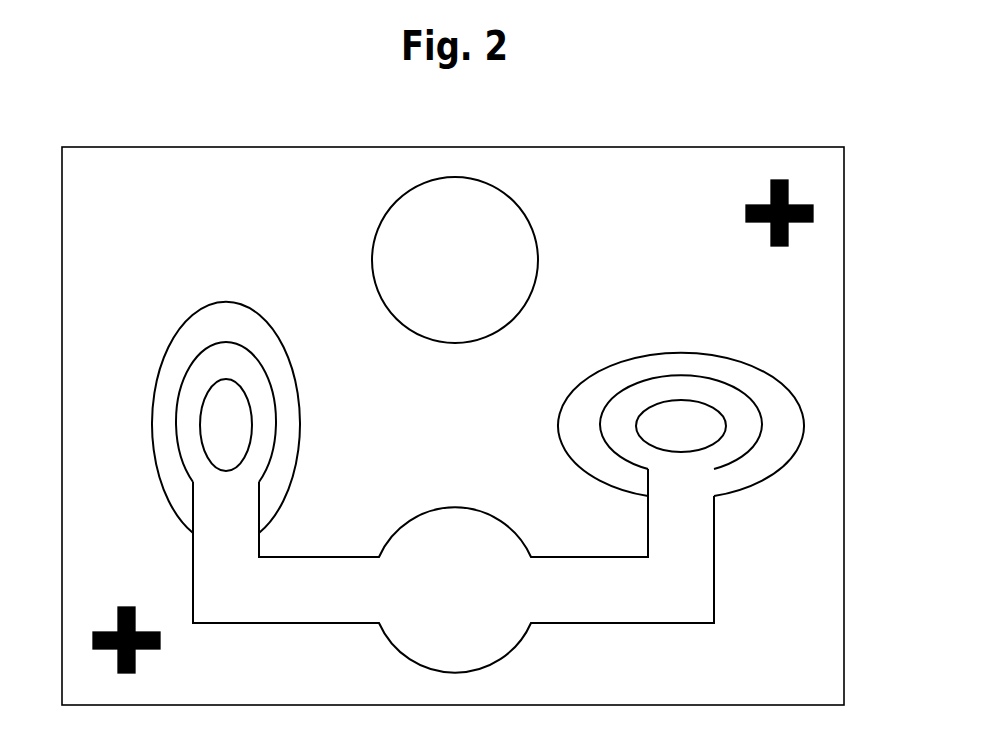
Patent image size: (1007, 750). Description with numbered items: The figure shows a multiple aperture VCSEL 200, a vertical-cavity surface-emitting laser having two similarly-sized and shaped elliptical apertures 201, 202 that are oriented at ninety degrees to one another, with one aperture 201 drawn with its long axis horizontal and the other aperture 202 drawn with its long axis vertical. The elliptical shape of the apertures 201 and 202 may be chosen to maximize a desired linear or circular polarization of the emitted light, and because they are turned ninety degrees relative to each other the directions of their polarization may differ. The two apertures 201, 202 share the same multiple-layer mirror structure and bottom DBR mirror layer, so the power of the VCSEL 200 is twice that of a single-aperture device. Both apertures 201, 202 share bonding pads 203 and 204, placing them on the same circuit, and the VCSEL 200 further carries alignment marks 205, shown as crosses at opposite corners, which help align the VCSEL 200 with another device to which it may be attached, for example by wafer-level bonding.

The multiple aperture VCSEL 200 is at (721, 109).
The aperture 201 is at (685, 353).
The aperture 202 is at (223, 302).
The bonding pad 203 is at (470, 272).
The bonding pad 204 is at (472, 598).
The alignment marks 205 is at (771, 222).